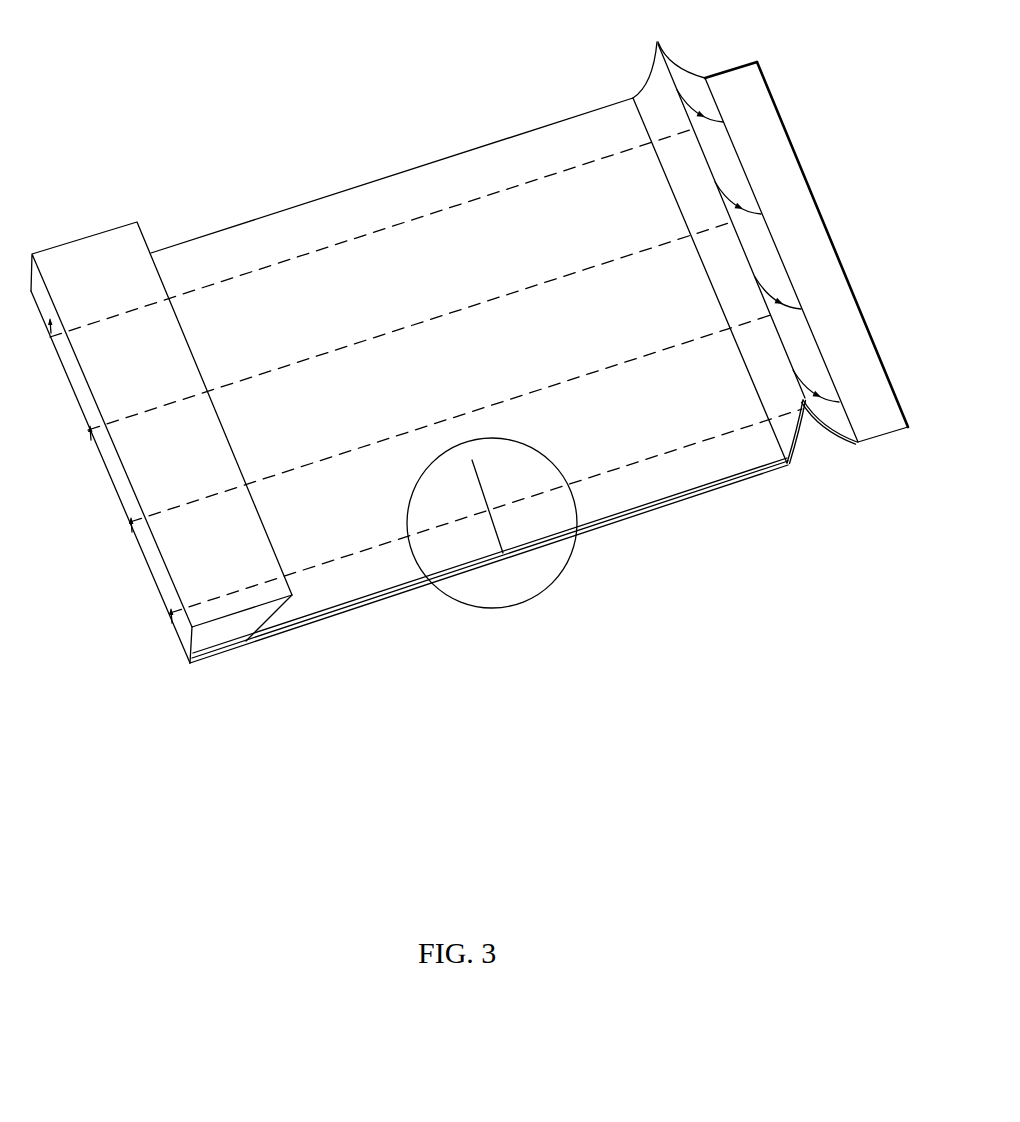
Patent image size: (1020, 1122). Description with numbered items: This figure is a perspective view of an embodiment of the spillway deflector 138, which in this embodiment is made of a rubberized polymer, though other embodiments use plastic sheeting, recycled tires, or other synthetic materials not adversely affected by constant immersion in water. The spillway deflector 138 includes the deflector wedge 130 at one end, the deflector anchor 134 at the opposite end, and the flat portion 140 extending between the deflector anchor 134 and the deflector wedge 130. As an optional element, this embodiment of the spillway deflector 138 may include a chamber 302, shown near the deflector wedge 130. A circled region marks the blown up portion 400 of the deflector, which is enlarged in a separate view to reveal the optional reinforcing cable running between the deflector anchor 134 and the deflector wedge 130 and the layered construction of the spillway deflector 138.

The spillway deflector 138 is at (165, 136).
The flat portion 140 is at (349, 192).
The deflector anchor 134 is at (96, 236).
The deflector wedge 130 is at (702, 252).
The chamber 302 is at (837, 440).
The blown up portion 400 is at (537, 595).